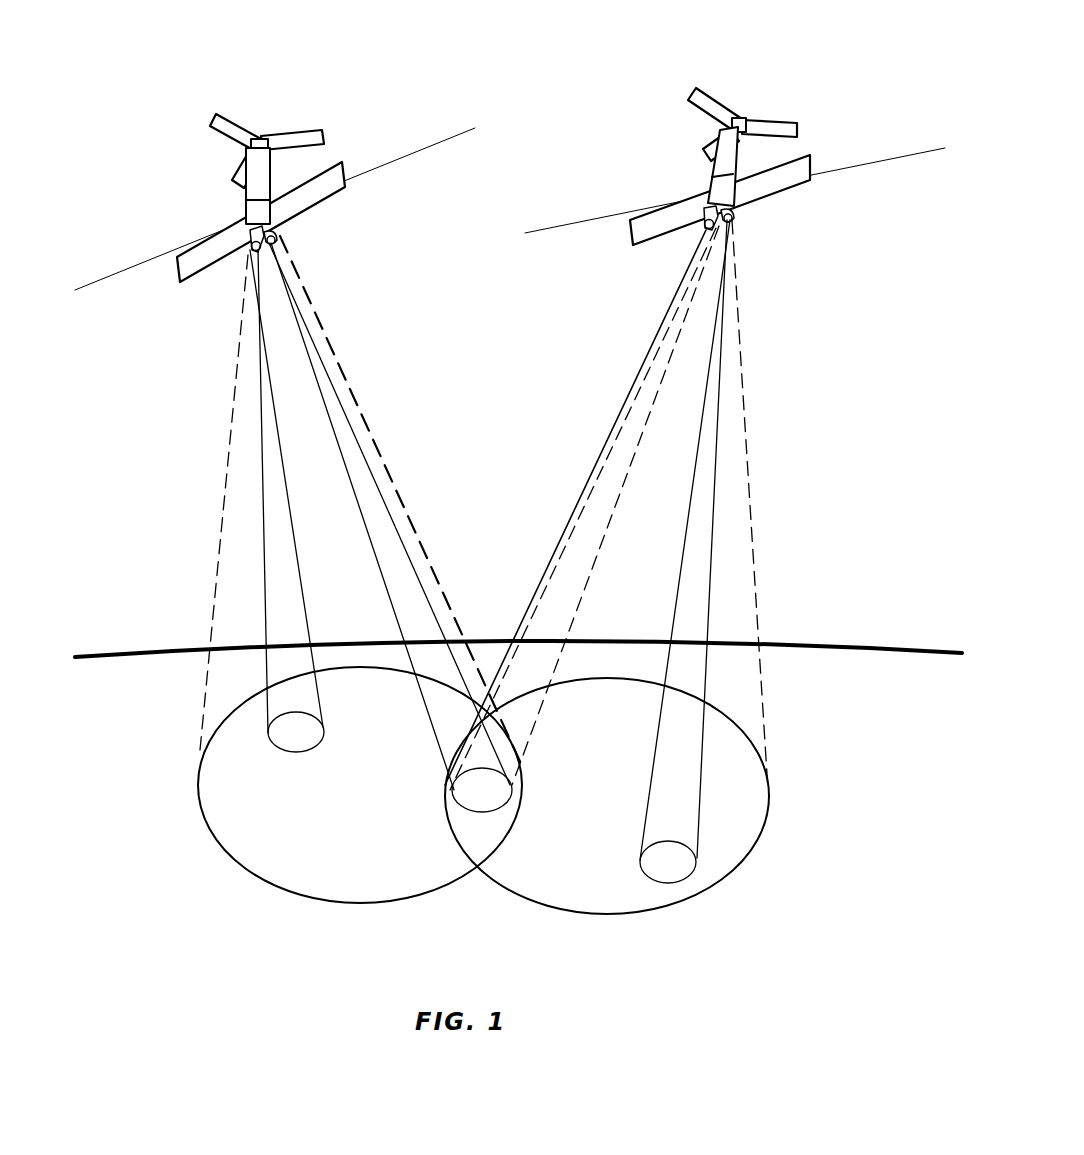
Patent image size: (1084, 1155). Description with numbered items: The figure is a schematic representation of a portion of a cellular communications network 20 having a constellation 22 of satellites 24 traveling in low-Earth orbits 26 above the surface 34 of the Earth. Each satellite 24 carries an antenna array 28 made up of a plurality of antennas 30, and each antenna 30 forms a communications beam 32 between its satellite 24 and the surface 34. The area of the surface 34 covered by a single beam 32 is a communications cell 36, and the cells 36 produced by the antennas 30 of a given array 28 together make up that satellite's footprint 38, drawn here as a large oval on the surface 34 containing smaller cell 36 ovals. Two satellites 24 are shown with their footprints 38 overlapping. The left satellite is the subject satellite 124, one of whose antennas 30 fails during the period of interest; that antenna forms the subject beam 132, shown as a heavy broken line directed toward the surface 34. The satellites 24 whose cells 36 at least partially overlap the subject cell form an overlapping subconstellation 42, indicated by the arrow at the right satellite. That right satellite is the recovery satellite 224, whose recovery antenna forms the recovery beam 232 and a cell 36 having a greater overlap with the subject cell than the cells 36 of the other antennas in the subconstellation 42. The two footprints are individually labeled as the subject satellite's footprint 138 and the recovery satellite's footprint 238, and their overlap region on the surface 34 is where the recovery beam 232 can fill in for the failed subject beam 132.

The cellular communications network 20 is at (842, 866).
The constellation 22 is at (733, 43).
The satellite 24 is at (250, 207).
The low-Earth orbit 26 is at (400, 158).
The antenna array 28 is at (276, 246).
The antenna 30 is at (278, 240).
The communications beam 32 is at (490, 540).
The surface of the Earth 34 is at (807, 667).
The communications cell 36 is at (287, 752).
The footprint 38 is at (463, 805).
The overlapping subconstellation 42 is at (659, 99).
The subject satellite 124 is at (313, 133).
The subject beam 132 is at (343, 433).
The first coverage area 138 is at (258, 877).
The recovery satellite 224 is at (780, 123).
The recovery beam 232 is at (617, 435).
The second coverage area 238 is at (623, 913).